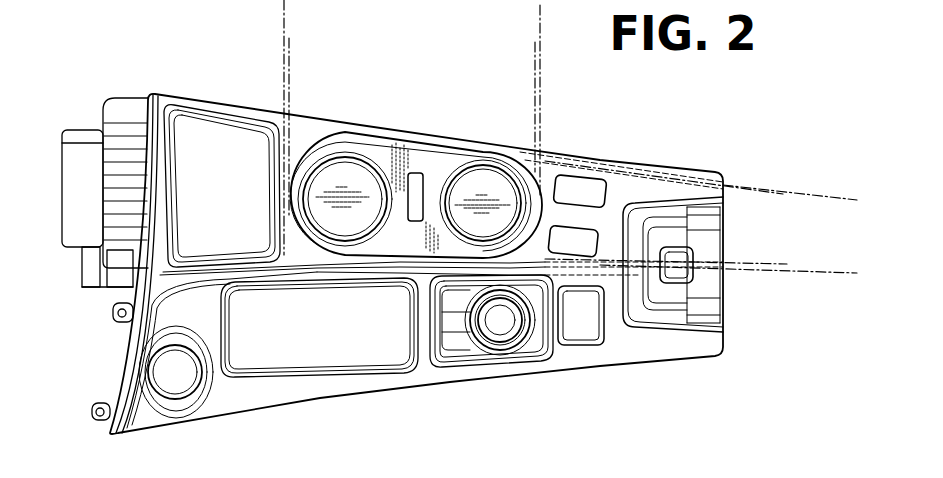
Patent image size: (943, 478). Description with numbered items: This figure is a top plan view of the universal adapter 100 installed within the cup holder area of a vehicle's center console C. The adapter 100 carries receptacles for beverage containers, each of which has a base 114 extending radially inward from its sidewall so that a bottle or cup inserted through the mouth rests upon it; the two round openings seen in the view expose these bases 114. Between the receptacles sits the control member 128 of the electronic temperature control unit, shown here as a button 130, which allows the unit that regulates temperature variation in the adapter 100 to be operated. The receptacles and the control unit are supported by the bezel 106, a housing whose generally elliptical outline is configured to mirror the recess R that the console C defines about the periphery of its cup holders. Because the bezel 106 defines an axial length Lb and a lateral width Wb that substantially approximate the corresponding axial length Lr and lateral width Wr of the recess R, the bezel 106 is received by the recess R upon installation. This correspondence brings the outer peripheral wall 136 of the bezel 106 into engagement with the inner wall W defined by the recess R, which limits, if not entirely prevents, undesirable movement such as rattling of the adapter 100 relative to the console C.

The adapter 100 is at (307, 133).
The bezel 106 is at (321, 250).
The base 114 is at (326, 210).
The control member 128 is at (415, 232).
The button 130 is at (420, 190).
The outer wall 136 is at (393, 252).
The recess R is at (298, 244).
The inner wall W is at (351, 258).
The center console C is at (110, 355).
The axial length of recess Lr is at (540, 48).
The axial length of bezel Lb is at (533, 80).
The lateral width of bezel Wb is at (765, 192).
The lateral width of recess Wr is at (815, 195).